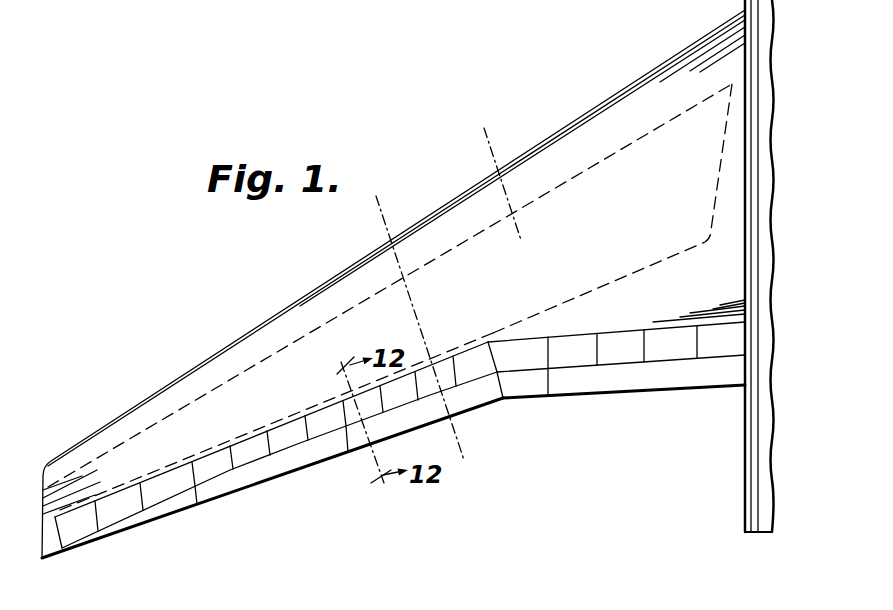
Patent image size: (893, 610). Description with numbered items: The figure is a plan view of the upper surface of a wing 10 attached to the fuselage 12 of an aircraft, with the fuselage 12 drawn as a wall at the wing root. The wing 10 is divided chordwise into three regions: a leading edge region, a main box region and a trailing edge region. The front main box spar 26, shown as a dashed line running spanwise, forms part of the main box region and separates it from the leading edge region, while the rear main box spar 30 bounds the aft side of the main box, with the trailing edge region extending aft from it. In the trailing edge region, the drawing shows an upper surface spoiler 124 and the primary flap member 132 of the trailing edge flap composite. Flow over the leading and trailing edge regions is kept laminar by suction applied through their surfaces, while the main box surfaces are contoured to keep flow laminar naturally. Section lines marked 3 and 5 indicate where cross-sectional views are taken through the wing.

The wing 10 is at (36, 536).
The fuselage 12 is at (763, 44).
The front main box spar 26 is at (118, 450).
The rear main box spar 30 is at (120, 493).
The upper surface spoiler 124 is at (523, 360).
The primary flap member 132 is at (252, 482).
The section line 3- 3 is at (367, 217).
The section line 5- 5 is at (477, 153).